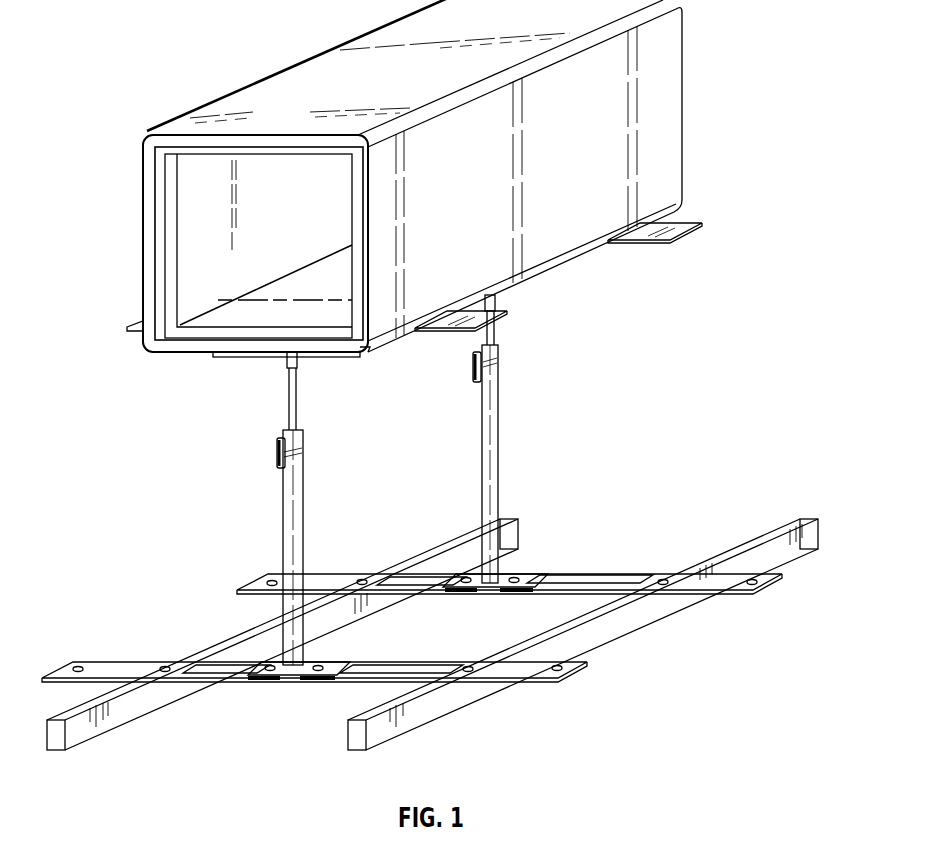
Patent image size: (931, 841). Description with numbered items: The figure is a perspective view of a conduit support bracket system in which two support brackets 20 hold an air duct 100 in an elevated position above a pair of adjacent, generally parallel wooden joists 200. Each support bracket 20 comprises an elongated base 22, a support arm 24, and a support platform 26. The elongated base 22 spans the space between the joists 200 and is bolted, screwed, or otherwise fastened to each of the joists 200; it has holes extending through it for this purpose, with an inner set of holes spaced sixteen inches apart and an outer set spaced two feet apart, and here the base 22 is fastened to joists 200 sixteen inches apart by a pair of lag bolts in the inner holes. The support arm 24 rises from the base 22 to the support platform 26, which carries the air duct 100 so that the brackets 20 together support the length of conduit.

The air duct 100 is at (670, 110).
The support platform 26 is at (676, 228).
The support arm 24 is at (303, 466).
The elongated base 22 is at (588, 573).
The wooden joists 200 is at (112, 716).
The support bracket 20 is at (200, 441).